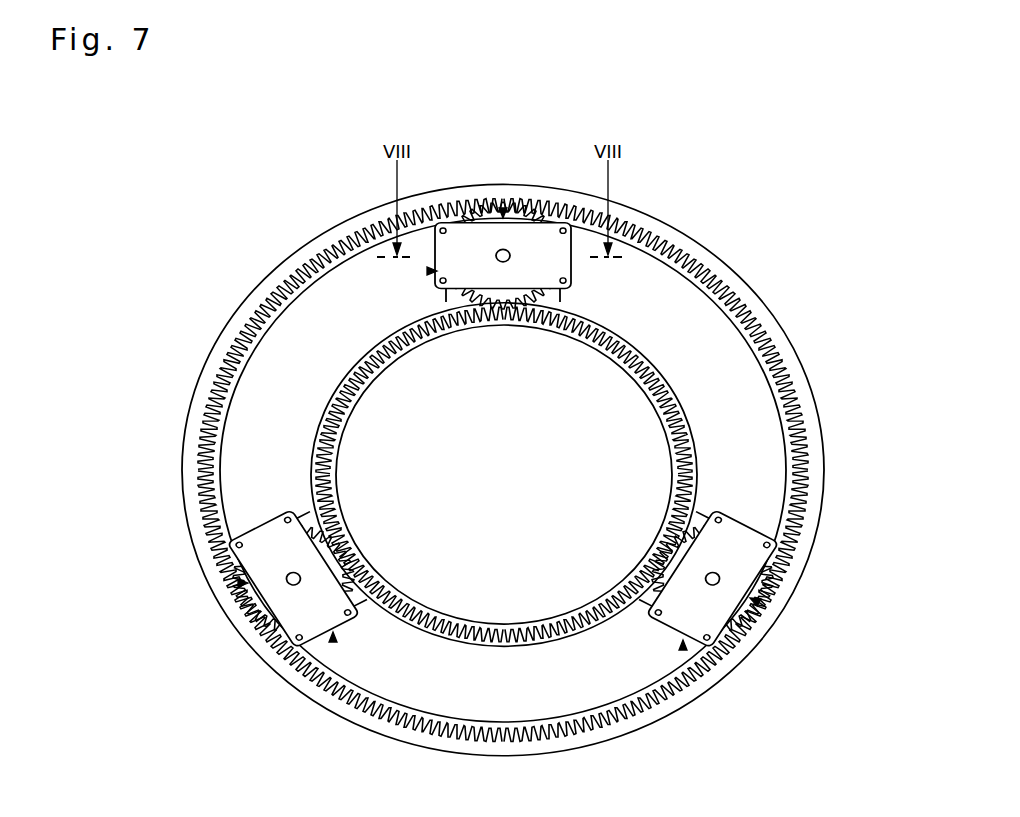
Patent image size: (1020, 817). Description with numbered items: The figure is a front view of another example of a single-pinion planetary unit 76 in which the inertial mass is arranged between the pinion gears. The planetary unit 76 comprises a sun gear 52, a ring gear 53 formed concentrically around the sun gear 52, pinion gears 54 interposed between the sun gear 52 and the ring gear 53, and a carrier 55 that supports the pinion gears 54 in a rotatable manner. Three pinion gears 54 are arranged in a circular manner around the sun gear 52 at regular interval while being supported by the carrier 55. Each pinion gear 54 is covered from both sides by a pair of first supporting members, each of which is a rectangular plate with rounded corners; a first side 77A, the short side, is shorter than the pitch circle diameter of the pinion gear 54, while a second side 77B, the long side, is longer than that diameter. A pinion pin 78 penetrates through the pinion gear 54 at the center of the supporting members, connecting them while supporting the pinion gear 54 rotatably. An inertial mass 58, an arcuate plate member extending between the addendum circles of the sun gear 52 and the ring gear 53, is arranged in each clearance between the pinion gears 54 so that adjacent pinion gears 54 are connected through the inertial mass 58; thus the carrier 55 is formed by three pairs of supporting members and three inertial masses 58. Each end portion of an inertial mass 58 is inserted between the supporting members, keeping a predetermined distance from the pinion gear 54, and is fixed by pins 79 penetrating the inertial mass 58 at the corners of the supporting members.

The planetary unit 76 is at (502, 456).
The sun gear 52 is at (663, 373).
The ring gear 53 is at (782, 337).
The inertial mass 58 is at (752, 408).
The pinion gear 54 is at (515, 212).
The carrier 55 is at (443, 283).
The pinion pin 78 is at (500, 249).
The pin 79 is at (444, 227).
The first side 77A is at (427, 271).
The second side 77B is at (503, 208).